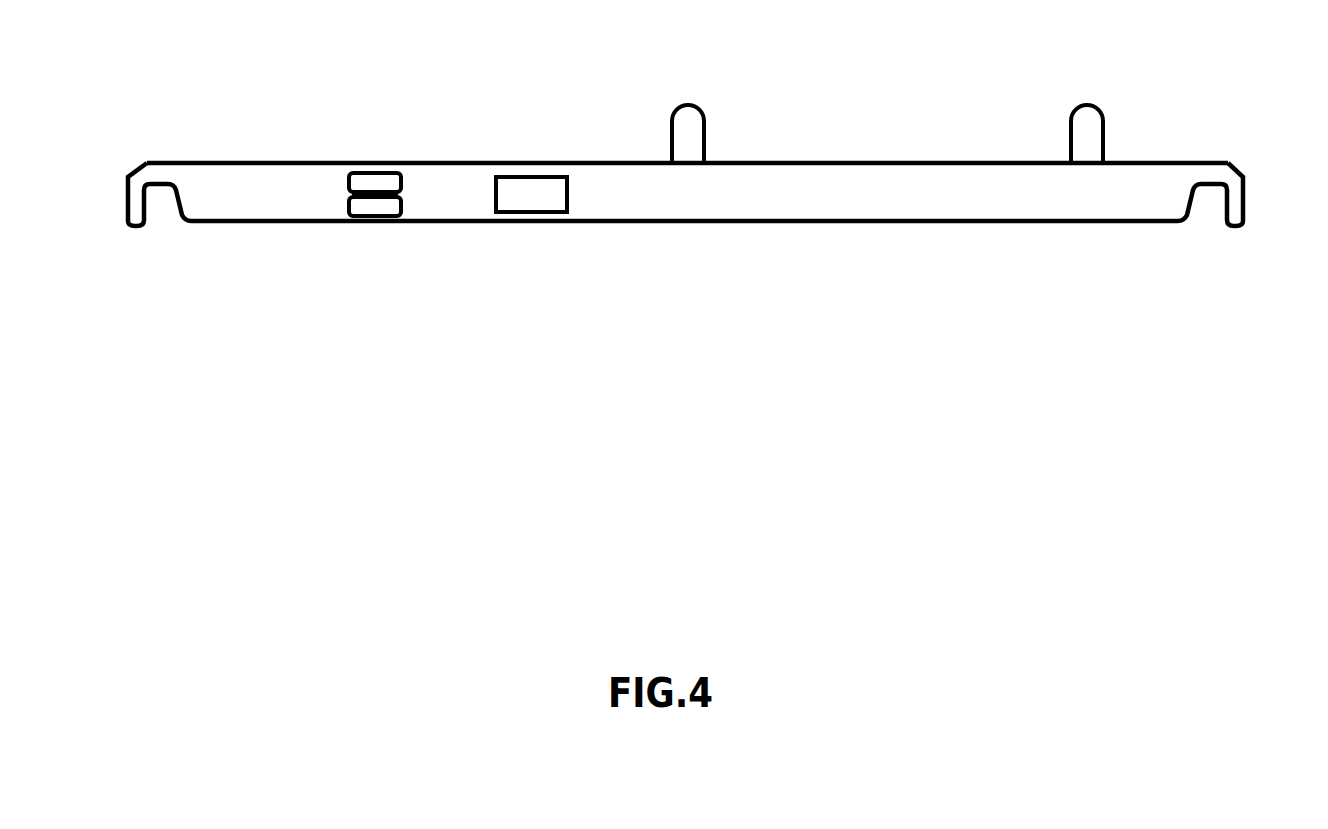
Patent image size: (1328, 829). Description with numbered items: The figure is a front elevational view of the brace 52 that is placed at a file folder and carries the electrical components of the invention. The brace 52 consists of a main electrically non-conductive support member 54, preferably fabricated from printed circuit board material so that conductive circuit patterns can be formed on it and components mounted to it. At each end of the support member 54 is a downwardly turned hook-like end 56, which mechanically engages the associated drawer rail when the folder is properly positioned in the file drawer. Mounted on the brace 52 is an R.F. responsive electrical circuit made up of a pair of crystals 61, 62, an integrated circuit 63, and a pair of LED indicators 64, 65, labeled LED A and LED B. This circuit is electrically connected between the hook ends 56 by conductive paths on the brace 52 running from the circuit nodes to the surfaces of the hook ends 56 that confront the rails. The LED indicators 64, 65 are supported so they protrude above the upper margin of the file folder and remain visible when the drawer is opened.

The brace 52 is at (866, 157).
The main electrically non-conductive support member 54 is at (957, 195).
The hook-like end 56 is at (134, 193).
The crystal 61 is at (387, 180).
The crystal 62 is at (380, 205).
The integrated circuit 63 is at (532, 195).
The LED indicator 64 is at (686, 130).
The LED indicator 65 is at (1090, 130).